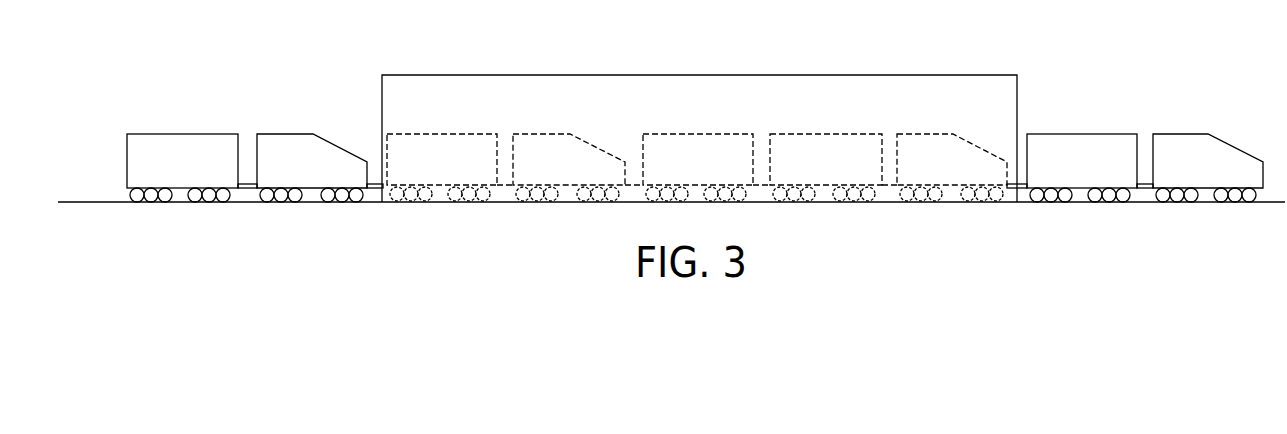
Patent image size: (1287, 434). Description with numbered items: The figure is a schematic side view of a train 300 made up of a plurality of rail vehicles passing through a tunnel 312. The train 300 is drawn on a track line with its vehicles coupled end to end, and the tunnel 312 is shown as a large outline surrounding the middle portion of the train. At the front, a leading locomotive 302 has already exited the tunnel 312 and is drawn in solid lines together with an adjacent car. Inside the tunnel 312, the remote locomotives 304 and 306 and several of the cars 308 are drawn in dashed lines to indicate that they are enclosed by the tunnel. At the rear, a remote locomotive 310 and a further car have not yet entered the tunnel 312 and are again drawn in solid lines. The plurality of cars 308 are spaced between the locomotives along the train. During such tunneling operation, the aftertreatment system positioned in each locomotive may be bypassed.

The train 300 is at (212, 87).
The leading locomotive 302 is at (1190, 134).
The remote locomotive 304 is at (932, 134).
The remote locomotive 306 is at (548, 134).
The cars 308 is at (173, 134).
The remote locomotive 310 is at (297, 134).
The tunnel 312 is at (915, 75).